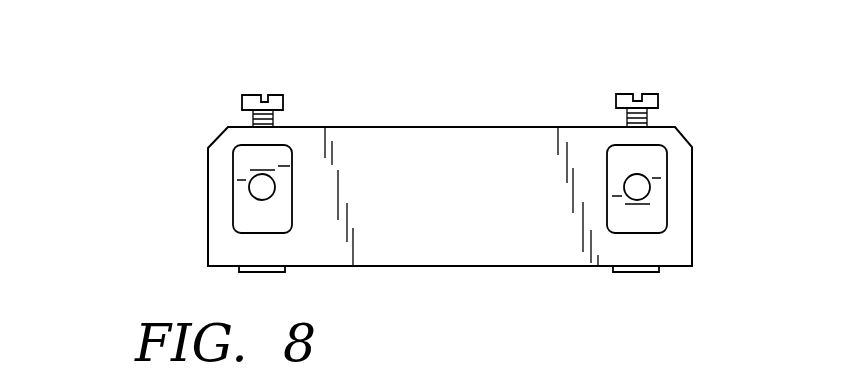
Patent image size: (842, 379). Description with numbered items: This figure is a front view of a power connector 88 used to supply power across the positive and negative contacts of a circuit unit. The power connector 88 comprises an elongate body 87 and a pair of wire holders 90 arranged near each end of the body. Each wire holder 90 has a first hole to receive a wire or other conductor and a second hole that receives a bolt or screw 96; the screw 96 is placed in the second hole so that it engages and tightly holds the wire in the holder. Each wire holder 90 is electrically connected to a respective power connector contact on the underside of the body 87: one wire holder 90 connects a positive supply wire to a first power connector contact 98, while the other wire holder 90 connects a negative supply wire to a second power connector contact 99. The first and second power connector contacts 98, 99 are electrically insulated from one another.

The power connector 88 is at (155, 91).
The elongate body 87 is at (443, 232).
The wire holder 90 is at (247, 161).
The bolt or screw 96 is at (251, 94).
The first power connector contact 98 is at (253, 272).
The second power connector contact 99 is at (648, 272).